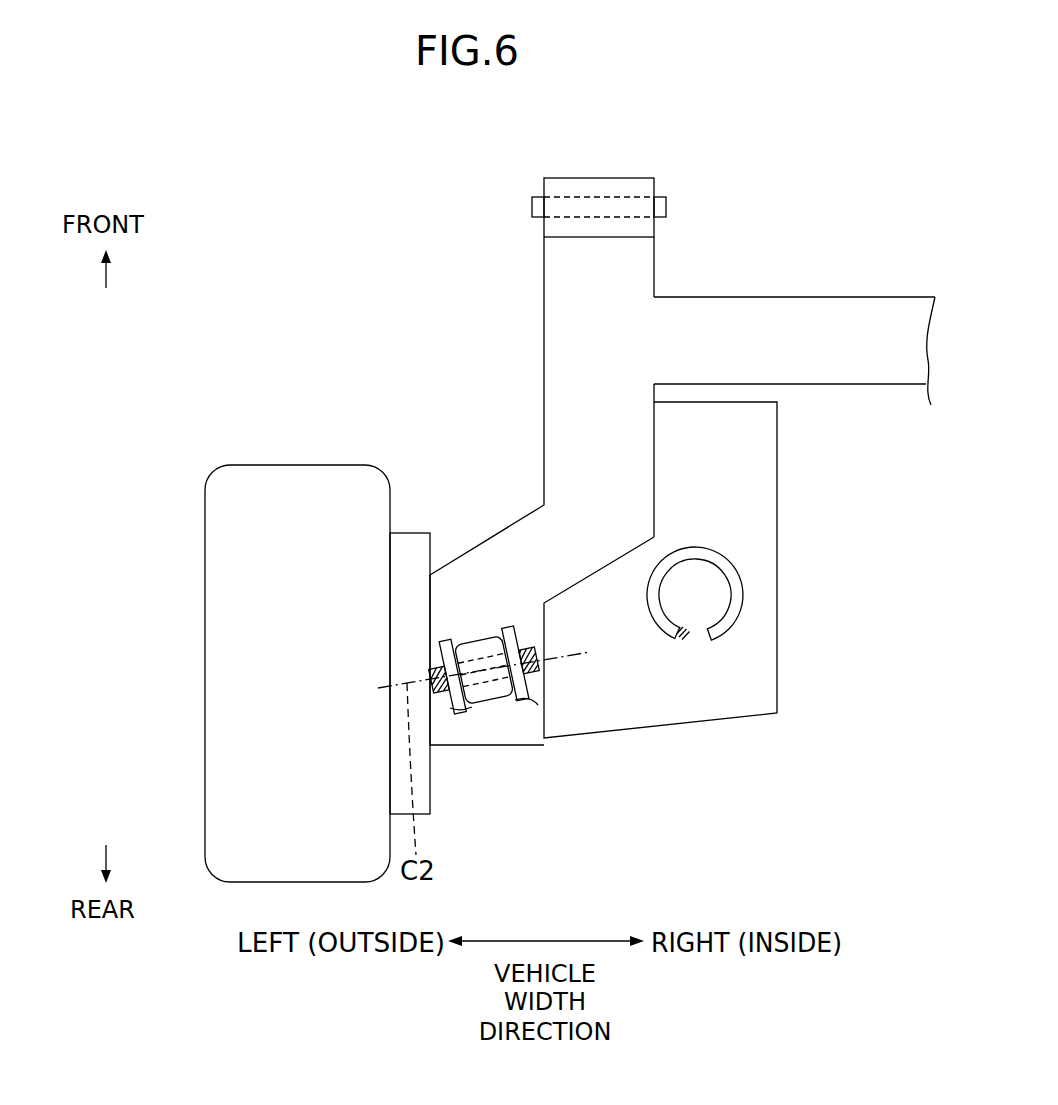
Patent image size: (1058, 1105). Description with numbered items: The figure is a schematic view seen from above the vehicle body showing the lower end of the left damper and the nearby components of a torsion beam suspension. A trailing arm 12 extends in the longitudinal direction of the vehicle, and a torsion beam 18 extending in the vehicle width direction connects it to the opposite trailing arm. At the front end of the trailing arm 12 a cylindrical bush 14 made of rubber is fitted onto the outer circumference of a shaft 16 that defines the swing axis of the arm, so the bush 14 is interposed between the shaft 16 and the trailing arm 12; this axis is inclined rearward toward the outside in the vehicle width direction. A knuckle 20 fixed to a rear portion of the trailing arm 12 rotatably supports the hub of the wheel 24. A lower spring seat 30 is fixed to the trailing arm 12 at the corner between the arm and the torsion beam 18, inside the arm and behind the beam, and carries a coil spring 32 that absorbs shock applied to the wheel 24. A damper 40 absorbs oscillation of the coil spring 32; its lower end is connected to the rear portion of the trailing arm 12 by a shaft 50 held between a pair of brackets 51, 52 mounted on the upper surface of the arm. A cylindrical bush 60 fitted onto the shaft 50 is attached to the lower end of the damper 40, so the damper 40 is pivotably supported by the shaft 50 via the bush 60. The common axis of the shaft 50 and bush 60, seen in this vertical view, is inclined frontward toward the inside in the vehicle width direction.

The trailing arm 12 is at (544, 372).
The bush 14 is at (597, 178).
The shaft 16 is at (666, 205).
The torsion beam 18 is at (880, 297).
The knuckle 20 is at (420, 533).
The wheel 24 is at (325, 465).
The lower spring seat 30 is at (767, 537).
The coil spring 32 is at (745, 588).
The damper 40 is at (495, 628).
The shaft 50 is at (483, 700).
The bracket 51 is at (533, 697).
The bracket 52 is at (443, 697).
The bush 60 is at (470, 640).